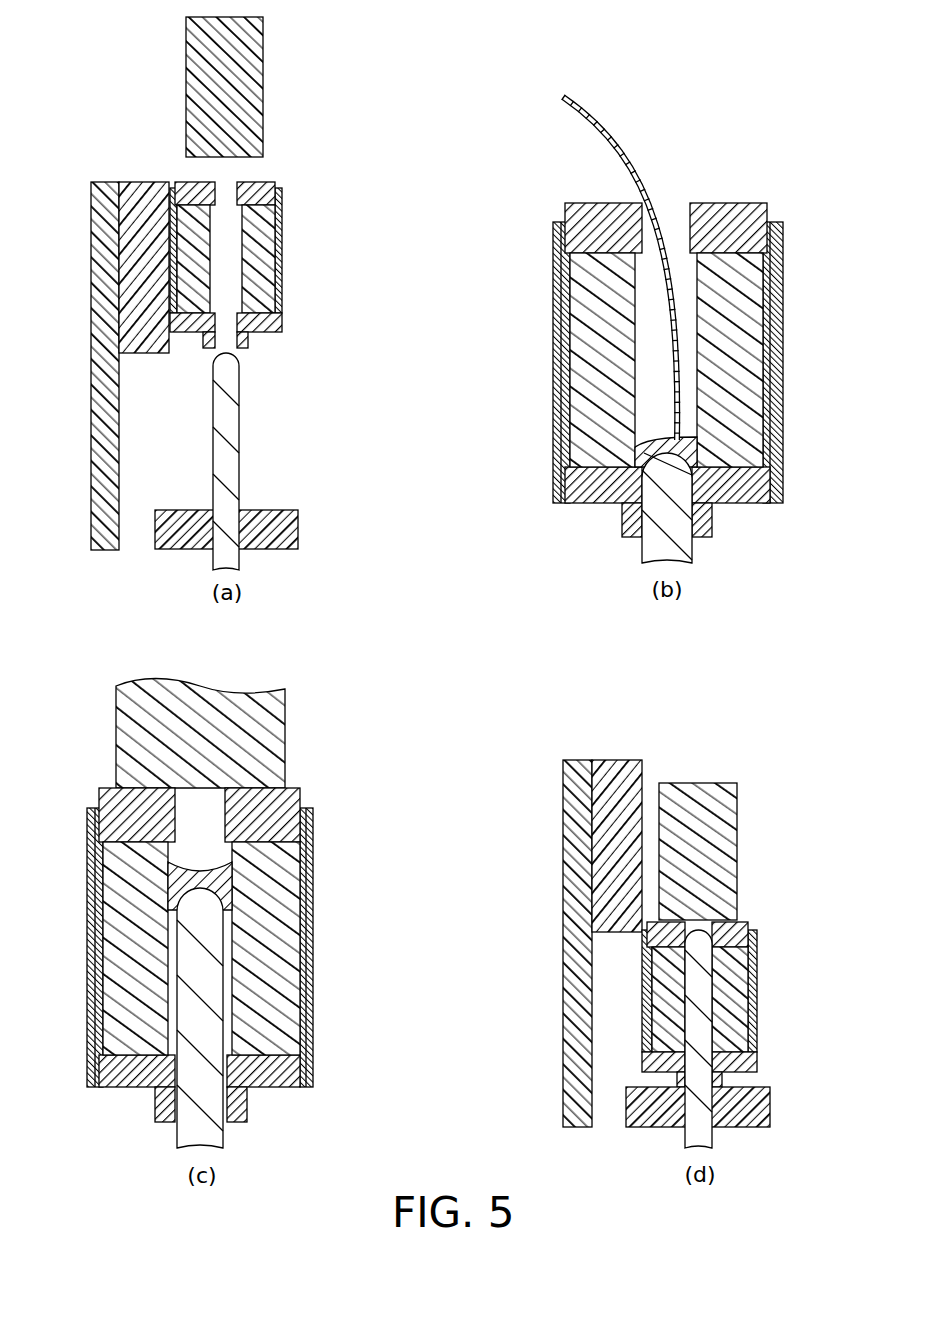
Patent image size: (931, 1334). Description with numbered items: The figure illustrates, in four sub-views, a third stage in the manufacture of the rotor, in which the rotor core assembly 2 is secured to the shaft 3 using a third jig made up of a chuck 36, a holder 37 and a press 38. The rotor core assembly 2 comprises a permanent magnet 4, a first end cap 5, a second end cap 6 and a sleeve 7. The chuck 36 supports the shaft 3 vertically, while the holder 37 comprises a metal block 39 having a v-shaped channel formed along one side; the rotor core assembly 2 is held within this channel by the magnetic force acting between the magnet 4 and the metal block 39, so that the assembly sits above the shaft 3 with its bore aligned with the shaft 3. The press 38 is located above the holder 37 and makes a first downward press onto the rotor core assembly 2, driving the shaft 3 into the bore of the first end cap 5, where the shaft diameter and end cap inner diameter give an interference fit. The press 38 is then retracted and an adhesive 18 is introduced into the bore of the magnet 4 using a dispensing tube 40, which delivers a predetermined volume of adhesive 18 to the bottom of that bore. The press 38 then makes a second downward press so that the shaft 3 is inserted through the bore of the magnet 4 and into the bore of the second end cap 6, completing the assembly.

The rotor core assembly 2 is at (283, 243).
The shaft 3 is at (239, 440).
The permanent magnet 4 is at (752, 413).
The first end cap 5 is at (750, 503).
The second end cap 6 is at (727, 203).
The sleeve 7 is at (783, 290).
The adhesive 18 is at (640, 446).
The chuck 36 is at (298, 524).
The holder 37 is at (82, 328).
The press 38 is at (264, 82).
The metal block 39 is at (141, 182).
The dispensing tube 40 is at (620, 147).